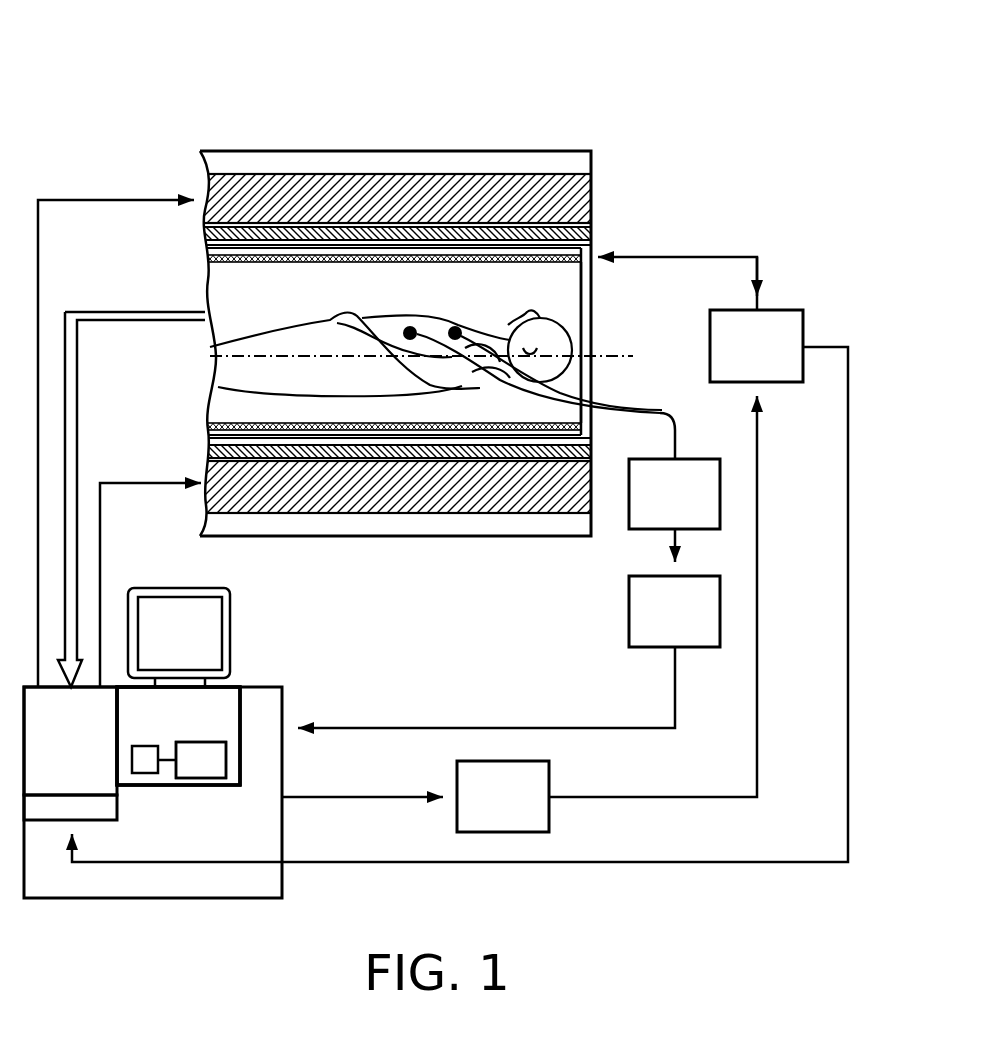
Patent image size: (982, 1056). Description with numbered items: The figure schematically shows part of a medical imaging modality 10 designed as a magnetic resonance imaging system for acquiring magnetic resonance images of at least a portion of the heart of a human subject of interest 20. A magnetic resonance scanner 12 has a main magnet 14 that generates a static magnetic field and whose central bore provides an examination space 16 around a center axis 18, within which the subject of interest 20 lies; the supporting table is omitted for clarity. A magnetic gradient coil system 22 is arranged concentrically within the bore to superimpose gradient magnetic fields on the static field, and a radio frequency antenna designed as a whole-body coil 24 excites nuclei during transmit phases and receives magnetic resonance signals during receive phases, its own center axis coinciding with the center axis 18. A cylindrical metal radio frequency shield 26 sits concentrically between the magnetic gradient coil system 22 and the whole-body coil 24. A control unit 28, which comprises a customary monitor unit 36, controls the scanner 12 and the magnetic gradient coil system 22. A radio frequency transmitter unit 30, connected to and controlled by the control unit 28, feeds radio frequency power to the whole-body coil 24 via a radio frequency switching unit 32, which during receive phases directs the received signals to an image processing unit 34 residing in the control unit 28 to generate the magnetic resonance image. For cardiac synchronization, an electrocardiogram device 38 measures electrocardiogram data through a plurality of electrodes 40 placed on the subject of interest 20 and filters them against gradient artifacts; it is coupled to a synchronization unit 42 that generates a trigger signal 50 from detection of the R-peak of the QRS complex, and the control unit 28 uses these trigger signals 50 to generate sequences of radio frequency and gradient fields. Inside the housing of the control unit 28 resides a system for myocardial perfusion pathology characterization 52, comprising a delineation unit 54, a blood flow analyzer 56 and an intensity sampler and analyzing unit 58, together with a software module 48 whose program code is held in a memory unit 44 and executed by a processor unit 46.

The medical imaging modality 10 is at (140, 95).
The magnetic resonance scanner 12 is at (598, 138).
The main magnet 14 is at (285, 200).
The examination space 16 is at (237, 291).
The center axis 18 is at (618, 355).
The subject of interest 20 is at (232, 370).
The magnetic gradient coil system 22 is at (338, 236).
The whole-body coil 24 is at (402, 258).
The radio frequency shield 26 is at (476, 247).
The control unit 28 is at (299, 678).
The radio frequency transmitter unit 30 is at (518, 811).
The radio frequency switching unit 32 is at (771, 360).
The image processing unit 34 is at (85, 729).
The monitor unit 36 is at (243, 629).
The electrocardiogram device 38 is at (690, 507).
The electrodes 40 is at (438, 316).
The synchronization unit 42 is at (690, 625).
The memory unit 44 is at (205, 763).
The processor unit 46 is at (143, 762).
The software module 48 is at (205, 763).
The trigger signal 50 is at (503, 728).
The system for myocardial perfusion pathology characterization 52 is at (193, 726).
The delineation unit 54 is at (249, 756).
The blood flow analyzer 56 is at (249, 756).
The intensity sampler and analyzing unit 58 is at (249, 756).